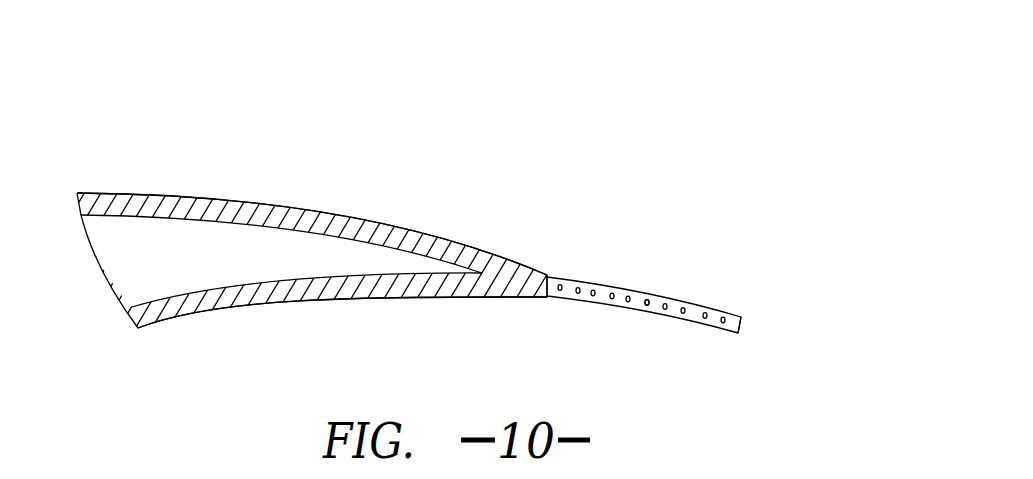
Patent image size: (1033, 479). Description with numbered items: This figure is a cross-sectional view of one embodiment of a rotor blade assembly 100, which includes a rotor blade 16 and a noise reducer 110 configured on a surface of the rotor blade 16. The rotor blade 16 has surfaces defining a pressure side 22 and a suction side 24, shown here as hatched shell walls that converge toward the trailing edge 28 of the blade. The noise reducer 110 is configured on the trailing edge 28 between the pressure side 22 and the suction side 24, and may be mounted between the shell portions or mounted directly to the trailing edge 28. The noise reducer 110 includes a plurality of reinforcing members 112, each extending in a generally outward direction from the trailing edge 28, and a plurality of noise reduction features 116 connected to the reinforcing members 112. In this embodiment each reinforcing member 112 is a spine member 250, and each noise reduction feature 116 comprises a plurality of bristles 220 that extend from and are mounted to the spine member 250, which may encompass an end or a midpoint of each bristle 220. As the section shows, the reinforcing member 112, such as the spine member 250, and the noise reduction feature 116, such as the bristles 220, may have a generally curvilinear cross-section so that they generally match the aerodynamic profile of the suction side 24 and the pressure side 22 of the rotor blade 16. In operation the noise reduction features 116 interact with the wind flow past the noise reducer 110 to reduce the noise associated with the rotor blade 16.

The rotor blade assembly 100 is at (312, 197).
The rotor blade 16 is at (170, 193).
The suction side 24 is at (327, 211).
The pressure side 22 is at (313, 301).
The trailing edge 28 is at (556, 273).
The noise reducer 110 is at (677, 230).
The noise reduction feature 116 is at (641, 286).
The spine member 250 is at (658, 330).
The bristles 220 is at (648, 303).
The reinforcing member 112 is at (750, 315).